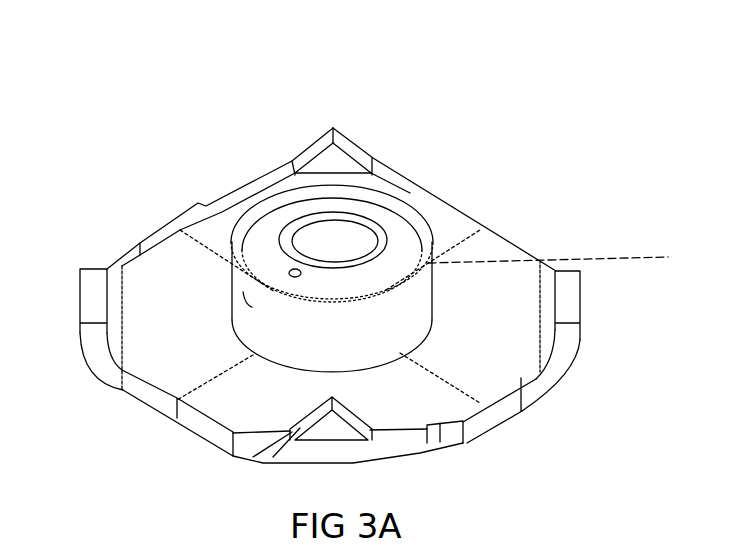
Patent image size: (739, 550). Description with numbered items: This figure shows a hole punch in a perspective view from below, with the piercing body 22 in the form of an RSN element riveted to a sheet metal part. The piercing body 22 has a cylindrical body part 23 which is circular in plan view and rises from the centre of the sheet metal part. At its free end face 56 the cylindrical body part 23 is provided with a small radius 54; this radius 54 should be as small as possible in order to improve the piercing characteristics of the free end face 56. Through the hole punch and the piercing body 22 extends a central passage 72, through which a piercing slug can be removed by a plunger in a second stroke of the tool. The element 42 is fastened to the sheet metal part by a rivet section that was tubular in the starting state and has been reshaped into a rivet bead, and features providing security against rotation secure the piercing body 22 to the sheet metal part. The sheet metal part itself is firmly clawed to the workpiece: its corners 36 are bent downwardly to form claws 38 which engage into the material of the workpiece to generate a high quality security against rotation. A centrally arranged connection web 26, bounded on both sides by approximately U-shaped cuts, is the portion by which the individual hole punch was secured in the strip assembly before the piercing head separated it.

The piercing body 22 is at (403, 234).
The cylindrical body part 23 is at (231, 242).
The connection web 26 is at (500, 410).
The corner 36 is at (90, 303).
The claw 38 is at (247, 460).
The element 42 is at (400, 314).
The radius 54 is at (564, 259).
The free end face 56 is at (320, 201).
The central passage 72 is at (307, 242).